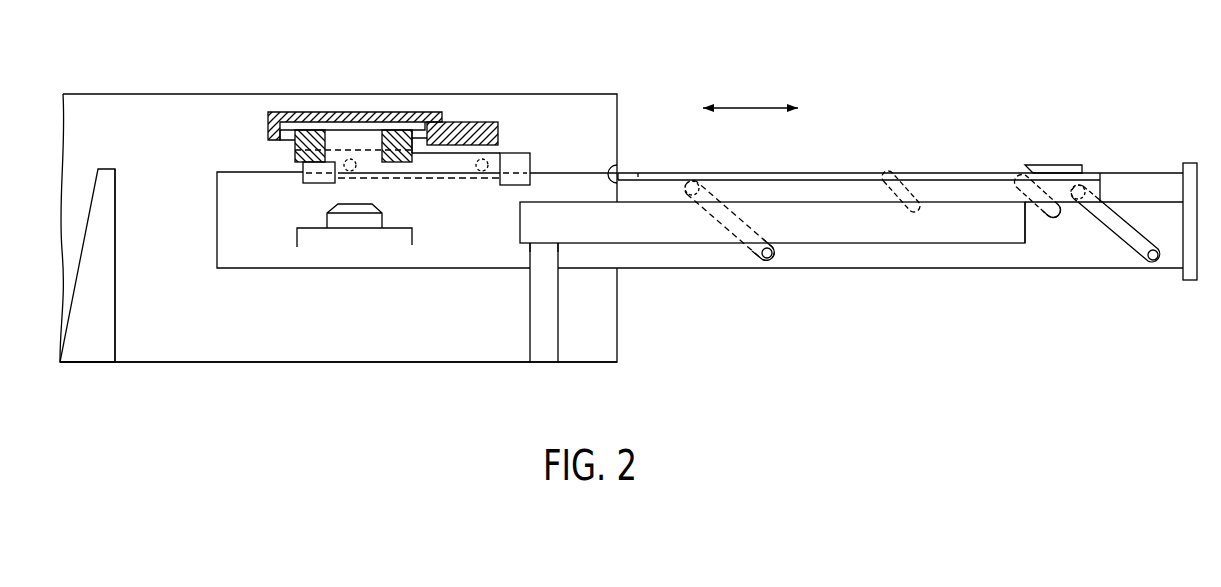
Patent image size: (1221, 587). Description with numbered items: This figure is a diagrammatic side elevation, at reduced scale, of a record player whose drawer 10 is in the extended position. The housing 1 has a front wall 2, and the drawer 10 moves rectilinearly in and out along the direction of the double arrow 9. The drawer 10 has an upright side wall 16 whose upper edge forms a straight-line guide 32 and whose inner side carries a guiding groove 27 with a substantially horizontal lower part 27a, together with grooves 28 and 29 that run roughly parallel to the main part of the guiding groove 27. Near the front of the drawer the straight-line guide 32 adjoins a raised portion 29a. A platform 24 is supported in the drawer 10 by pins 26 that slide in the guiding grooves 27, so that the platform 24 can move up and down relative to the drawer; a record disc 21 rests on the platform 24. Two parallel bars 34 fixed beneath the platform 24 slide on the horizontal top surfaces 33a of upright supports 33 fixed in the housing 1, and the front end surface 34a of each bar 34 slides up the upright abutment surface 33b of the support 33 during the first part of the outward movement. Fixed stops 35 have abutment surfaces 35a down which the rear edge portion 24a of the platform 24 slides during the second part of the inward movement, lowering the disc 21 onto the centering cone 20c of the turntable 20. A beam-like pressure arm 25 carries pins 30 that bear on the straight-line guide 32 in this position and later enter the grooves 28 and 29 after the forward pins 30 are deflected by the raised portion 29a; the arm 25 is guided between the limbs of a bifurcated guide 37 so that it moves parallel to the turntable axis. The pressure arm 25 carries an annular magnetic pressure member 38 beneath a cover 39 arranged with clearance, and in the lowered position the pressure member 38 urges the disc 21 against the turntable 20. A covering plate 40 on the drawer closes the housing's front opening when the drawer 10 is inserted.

The housing 1 is at (605, 119).
The front wall 2 is at (617, 338).
The double arrow 9 is at (747, 107).
The drawer 10 is at (986, 283).
The side wall 16 is at (1132, 187).
The turntable 20 is at (405, 238).
The centering cone 20c is at (372, 222).
The record disc 21 is at (765, 180).
The platform 24 is at (823, 192).
The rear edge portion 24a is at (617, 170).
The pressure arm 25 is at (452, 132).
The pin 26 is at (1088, 173).
The guiding groove 27 is at (1127, 243).
The horizontal part 27a is at (1151, 259).
The groove 28 is at (910, 178).
The groove 29 is at (1058, 214).
The raised portion 29a is at (1035, 164).
The pin 30 is at (483, 159).
The straight-line guide 32 is at (561, 173).
The upright support 33 is at (552, 303).
The horizontal top surface 33a is at (552, 246).
The upright abutment surface 33b is at (530, 245).
The bar 34 is at (882, 236).
The front end surface 34a is at (1027, 228).
The stop 35 is at (105, 240).
The abutment surface 35a is at (117, 205).
The bifurcated guide 37 is at (518, 160).
The pressure member 38 is at (295, 155).
The cover 39 is at (294, 114).
The covering plate 40 is at (1188, 170).